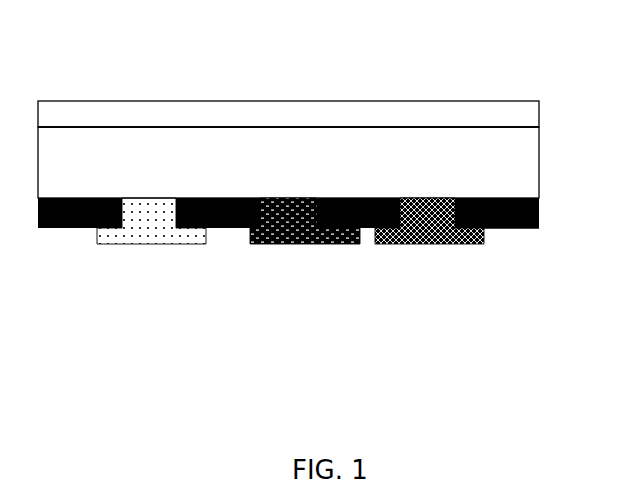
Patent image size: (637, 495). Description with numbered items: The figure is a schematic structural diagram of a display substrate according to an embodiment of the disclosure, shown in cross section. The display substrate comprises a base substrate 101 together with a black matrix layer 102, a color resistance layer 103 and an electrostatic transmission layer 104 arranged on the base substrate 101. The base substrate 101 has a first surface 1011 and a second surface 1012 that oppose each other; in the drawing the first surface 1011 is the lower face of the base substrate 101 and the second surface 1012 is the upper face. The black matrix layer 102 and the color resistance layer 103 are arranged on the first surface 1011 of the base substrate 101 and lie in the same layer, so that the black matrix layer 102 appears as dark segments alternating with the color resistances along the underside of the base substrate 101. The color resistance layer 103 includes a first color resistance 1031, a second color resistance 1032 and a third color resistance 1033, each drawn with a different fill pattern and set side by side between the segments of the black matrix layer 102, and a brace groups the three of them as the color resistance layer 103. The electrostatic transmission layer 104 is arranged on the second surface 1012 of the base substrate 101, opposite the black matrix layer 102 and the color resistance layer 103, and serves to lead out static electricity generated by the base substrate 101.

The base substrate 101 is at (288, 110).
The first surface 1011 is at (530, 272).
The second surface 1012 is at (288, 73).
The black matrix layer 102 is at (288, 125).
The color resistance layer 103 is at (302, 285).
The first color resistance 1031 is at (165, 262).
The second color resistance 1032 is at (306, 262).
The third color resistance 1033 is at (441, 262).
The electrostatic transmission layer 104 is at (289, 74).